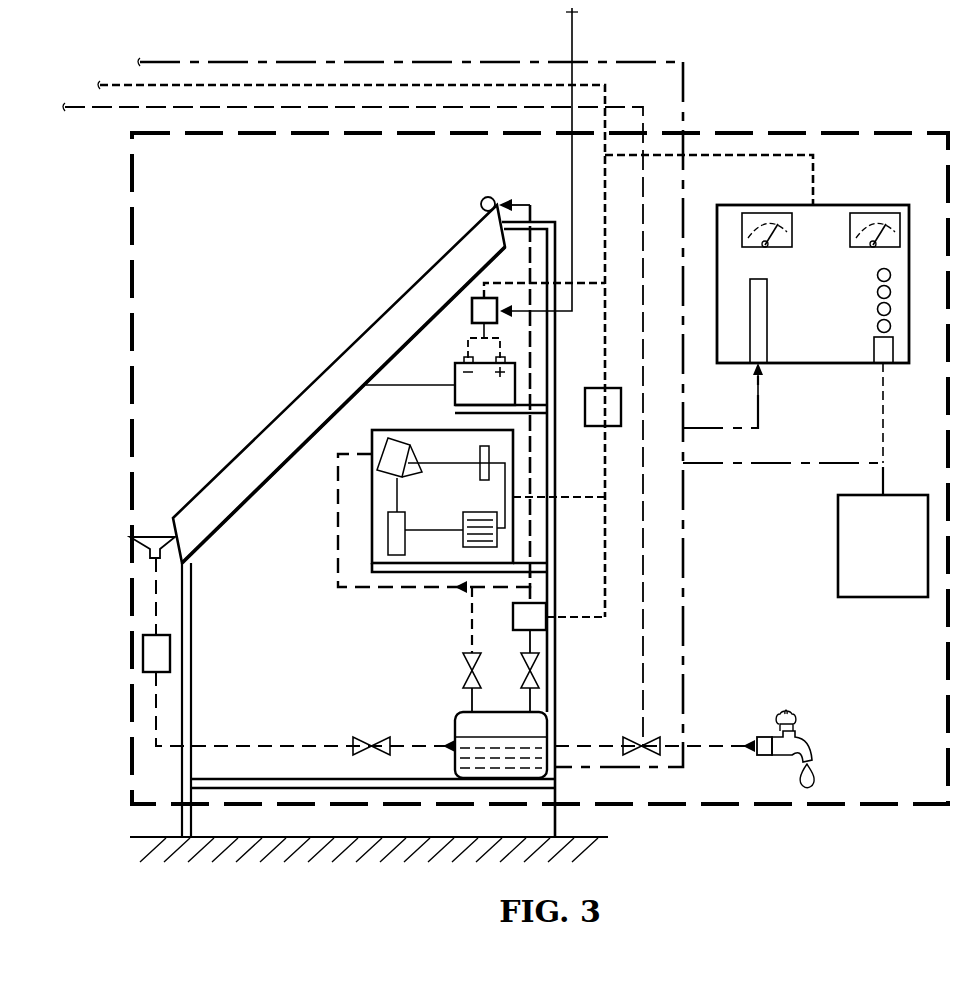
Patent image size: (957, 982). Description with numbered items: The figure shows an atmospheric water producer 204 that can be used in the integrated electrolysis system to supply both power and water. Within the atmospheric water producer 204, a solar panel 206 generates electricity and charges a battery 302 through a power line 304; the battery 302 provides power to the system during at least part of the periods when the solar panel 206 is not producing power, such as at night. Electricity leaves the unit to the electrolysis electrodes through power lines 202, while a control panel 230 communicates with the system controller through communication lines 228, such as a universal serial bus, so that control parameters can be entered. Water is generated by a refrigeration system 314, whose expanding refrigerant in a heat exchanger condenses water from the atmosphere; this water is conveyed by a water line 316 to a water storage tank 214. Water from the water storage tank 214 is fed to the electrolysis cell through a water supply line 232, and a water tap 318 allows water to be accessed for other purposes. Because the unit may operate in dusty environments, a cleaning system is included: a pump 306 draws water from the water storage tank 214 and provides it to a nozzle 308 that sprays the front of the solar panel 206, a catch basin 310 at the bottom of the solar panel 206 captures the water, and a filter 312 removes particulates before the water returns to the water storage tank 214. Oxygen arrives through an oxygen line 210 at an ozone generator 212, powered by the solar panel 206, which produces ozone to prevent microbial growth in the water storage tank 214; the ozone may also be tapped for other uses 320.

The power lines 202 is at (115, 83).
The atmospheric water producer 204 is at (881, 806).
The solar panel 206 is at (312, 392).
The oxygen line 210 is at (685, 103).
The ozone generator 212 is at (860, 204).
The water storage tank 214 is at (456, 727).
The communication lines 228 is at (575, 33).
The control panel 230 is at (470, 305).
The water supply line 232 is at (108, 108).
The battery 302 is at (455, 398).
The power line 304 is at (412, 382).
The pump 306 is at (512, 617).
The nozzle 308 is at (485, 198).
The catch basin 310 is at (153, 536).
The filter 312 is at (142, 650).
The refrigeration system 314 is at (372, 507).
The water line 316 is at (340, 560).
The water tap 318 is at (816, 757).
The other uses 320 is at (893, 598).